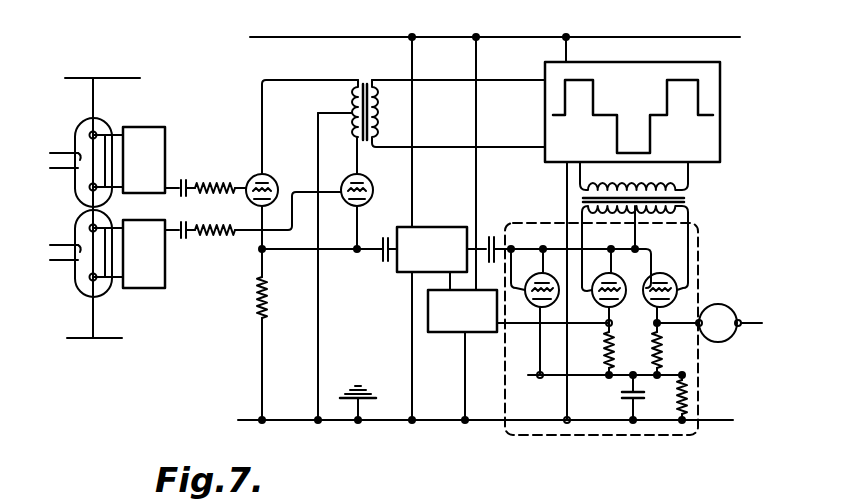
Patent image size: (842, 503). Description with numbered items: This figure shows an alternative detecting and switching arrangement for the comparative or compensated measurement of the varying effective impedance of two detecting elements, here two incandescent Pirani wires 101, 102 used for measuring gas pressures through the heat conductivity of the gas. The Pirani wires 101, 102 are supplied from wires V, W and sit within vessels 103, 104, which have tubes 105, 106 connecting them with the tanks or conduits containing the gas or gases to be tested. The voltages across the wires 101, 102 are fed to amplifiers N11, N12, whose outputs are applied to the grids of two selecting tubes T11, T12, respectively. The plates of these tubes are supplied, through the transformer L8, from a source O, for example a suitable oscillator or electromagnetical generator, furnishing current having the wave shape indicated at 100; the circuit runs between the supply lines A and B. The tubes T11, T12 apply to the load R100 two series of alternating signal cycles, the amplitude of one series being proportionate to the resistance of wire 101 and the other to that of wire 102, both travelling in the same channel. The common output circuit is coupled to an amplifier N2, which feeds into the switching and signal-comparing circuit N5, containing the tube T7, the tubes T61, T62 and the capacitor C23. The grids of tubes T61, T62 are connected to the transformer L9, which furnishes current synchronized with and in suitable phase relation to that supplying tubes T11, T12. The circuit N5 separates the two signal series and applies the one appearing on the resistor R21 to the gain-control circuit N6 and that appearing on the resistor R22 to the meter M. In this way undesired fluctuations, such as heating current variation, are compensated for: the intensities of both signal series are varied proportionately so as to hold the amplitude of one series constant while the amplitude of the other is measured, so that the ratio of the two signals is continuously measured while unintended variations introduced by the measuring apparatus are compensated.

The wave shape 100 is at (667, 94).
The Pirani wire 101 is at (78, 159).
The Pirani wire 102 is at (90, 260).
The vessel 103 is at (78, 199).
The vessel 104 is at (75, 236).
The tube 105 is at (56, 168).
The tube 106 is at (56, 256).
The amplifier N11 is at (144, 160).
The amplifier N12 is at (144, 254).
The selecting tube T11 is at (253, 177).
The selecting tube T12 is at (369, 182).
The transformer L8 is at (365, 70).
The amplifier N2 is at (432, 249).
The gain-control circuit N6 is at (462, 346).
The switching and signal-comparing circuit N5 is at (549, 214).
The transformer L9 is at (686, 199).
The tube T7 is at (536, 276).
The tube T61 is at (618, 279).
The tube T62 is at (663, 275).
The meter M is at (709, 323).
The load R100 is at (257, 299).
The resistor R21 is at (596, 363).
The resistor R22 is at (665, 348).
The capacitor C23 is at (614, 397).
The source O is at (720, 68).
The supply line A is at (272, 37).
The supply line B is at (247, 418).
The supply wire V is at (100, 78).
The supply wire W is at (96, 338).